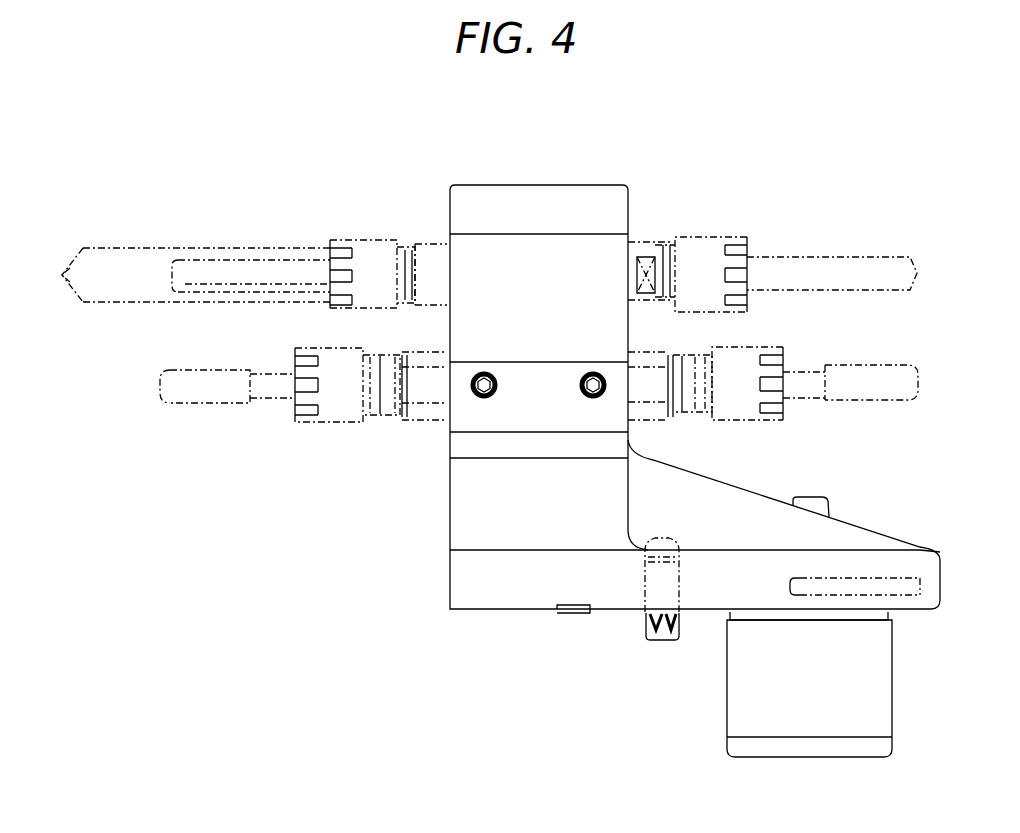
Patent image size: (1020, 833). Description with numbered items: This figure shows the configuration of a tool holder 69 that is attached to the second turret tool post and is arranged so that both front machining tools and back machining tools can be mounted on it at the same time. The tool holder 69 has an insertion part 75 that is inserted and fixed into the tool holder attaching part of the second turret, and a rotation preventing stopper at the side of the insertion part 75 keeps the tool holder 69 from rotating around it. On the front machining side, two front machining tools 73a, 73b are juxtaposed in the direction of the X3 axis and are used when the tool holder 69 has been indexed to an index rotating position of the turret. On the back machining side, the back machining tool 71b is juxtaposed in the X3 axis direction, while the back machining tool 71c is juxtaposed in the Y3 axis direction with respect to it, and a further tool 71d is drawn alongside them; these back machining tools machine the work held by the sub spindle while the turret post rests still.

The tool holder 69 is at (604, 194).
The back machining tool 71b is at (250, 403).
The back machining tool 71c is at (163, 250).
The pipe 71d is at (288, 260).
The front machining tool 73a is at (790, 258).
The front machining tool 73b is at (808, 371).
The insertion part 75 is at (735, 706).